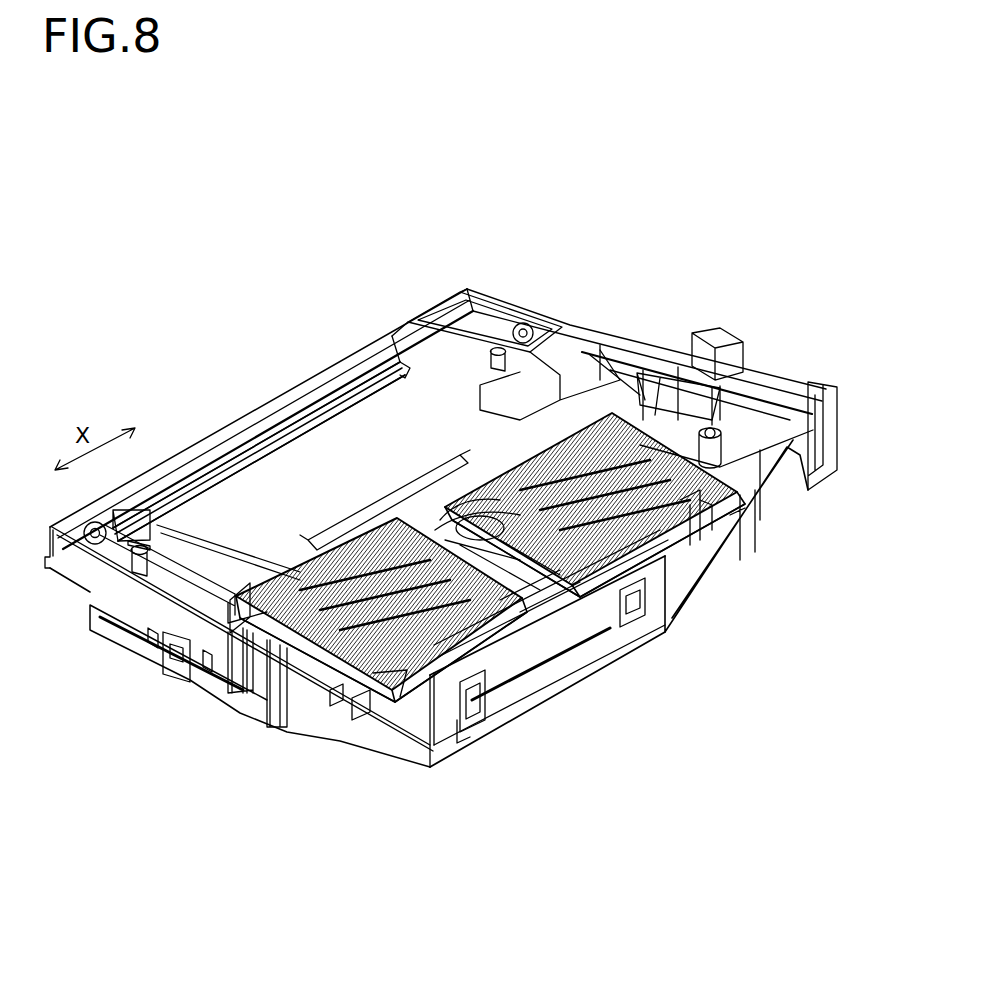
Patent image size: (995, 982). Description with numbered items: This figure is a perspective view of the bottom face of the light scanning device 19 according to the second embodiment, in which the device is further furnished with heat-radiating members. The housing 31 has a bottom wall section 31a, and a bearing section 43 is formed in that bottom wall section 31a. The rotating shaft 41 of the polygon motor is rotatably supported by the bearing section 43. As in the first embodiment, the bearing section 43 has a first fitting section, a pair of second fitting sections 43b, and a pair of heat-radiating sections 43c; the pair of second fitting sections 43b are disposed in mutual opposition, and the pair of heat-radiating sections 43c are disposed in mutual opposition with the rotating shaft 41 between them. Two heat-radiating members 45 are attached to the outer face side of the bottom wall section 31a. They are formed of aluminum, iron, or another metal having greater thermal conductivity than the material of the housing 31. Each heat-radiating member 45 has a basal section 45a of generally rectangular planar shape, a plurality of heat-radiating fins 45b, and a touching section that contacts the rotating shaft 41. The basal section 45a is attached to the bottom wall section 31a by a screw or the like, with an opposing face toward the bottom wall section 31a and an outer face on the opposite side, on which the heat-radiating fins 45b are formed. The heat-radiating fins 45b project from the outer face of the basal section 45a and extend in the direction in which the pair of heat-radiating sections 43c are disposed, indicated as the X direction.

The sheet feeding tray unit 19 is at (441, 528).
The housing 31 is at (405, 305).
The bottom wall section 31a is at (237, 507).
The rotating shaft 41 is at (580, 623).
The bearing section 43 is at (453, 513).
The second fitting sections 43b is at (450, 512).
The heat-radiating sections 43c is at (555, 575).
The heat-radiating members 45 is at (730, 465).
The basal section 45a is at (670, 530).
The heat-radiating fins 45b is at (713, 508).